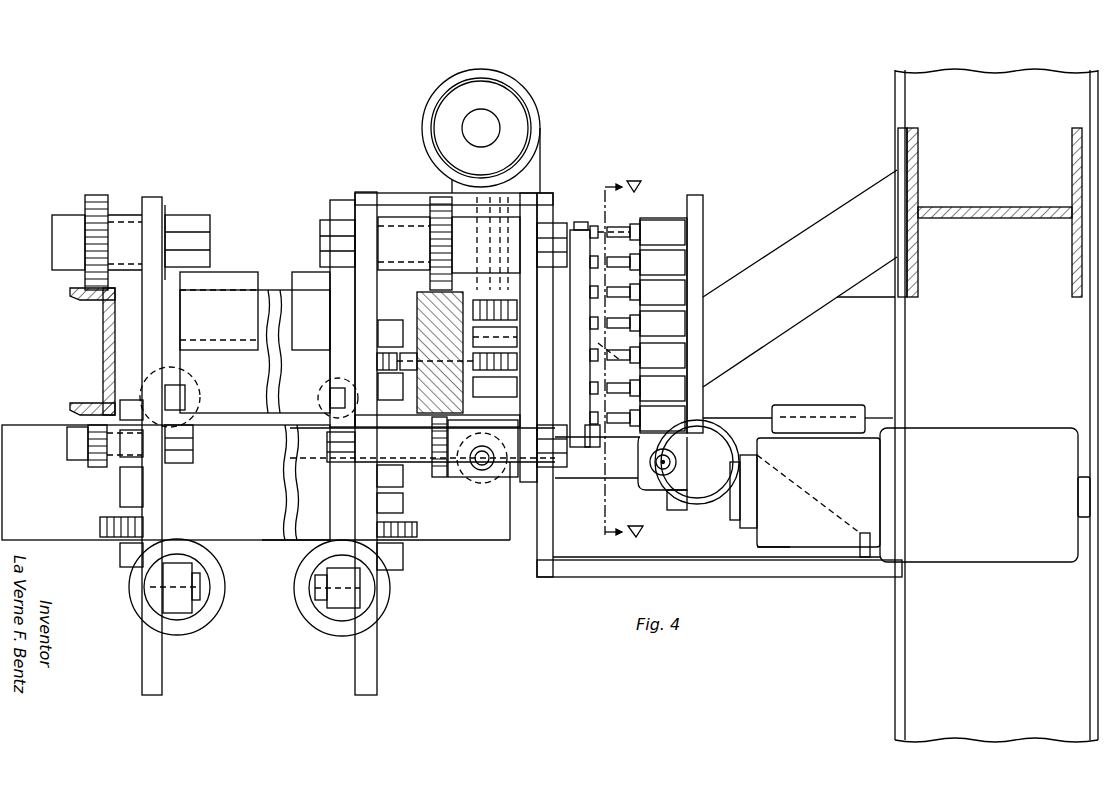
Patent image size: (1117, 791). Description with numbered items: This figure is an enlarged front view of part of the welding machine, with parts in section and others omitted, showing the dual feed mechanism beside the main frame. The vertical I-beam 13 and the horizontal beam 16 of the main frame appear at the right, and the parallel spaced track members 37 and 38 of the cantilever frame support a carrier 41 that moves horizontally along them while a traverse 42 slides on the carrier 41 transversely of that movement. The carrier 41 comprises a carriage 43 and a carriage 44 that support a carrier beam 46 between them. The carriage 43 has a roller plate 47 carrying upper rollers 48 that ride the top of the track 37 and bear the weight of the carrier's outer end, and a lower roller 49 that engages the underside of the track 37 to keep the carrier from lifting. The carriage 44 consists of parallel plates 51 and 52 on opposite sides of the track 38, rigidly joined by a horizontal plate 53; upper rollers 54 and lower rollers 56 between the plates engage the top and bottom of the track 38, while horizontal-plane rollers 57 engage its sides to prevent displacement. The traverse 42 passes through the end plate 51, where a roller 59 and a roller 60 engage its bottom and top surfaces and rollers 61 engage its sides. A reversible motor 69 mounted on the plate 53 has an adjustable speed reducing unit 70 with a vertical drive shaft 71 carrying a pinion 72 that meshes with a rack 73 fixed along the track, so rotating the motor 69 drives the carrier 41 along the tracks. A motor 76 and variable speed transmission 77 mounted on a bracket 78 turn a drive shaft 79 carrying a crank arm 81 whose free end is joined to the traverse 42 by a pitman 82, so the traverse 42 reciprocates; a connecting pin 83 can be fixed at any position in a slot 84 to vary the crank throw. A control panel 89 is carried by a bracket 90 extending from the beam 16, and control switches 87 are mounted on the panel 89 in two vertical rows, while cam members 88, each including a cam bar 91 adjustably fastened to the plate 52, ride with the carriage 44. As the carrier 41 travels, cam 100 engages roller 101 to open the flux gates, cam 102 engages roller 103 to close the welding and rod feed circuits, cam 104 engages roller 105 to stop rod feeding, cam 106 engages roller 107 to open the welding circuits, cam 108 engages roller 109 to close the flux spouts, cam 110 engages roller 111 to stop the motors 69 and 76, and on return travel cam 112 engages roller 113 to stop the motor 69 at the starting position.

The vertical I-beam 13 is at (903, 648).
The horizontal beam 16 is at (912, 278).
The track member 37 is at (103, 370).
The track member 38 is at (417, 303).
The carrier 41 is at (304, 265).
The traverse 42 is at (288, 540).
The carriage 43 is at (162, 200).
The carriage 44 is at (339, 200).
The carrier beam 46 is at (268, 356).
The roller plate 47 is at (162, 672).
The upper roller 48 is at (96, 196).
The lower roller 49 is at (94, 468).
The end plate 51 is at (366, 200).
The plate 52 is at (553, 205).
The horizontal plate 53 is at (408, 194).
The upper roller 54 is at (428, 258).
The lower roller 56 is at (440, 478).
The side roller 57 is at (473, 362).
The roller 59 is at (333, 630).
The roller 60 is at (324, 388).
The roller 61 is at (417, 529).
The reversible motor 69 is at (422, 122).
The adjustable speed reducing unit 70 is at (540, 118).
The vertical drive shaft 71 is at (476, 246).
The pinion 72 is at (473, 334).
The rack 73 is at (473, 309).
The motor 76 is at (996, 434).
The variable speed transmission 77 is at (757, 535).
The bracket 78 is at (742, 578).
The drive shaft 79 is at (697, 462).
The crank arm 81 is at (678, 492).
The pitman 82 is at (584, 475).
The connecting pin 83 is at (650, 462).
The slot 84 is at (697, 462).
The control switch 87 is at (678, 216).
The cam member 88 is at (583, 228).
The control panel 89 is at (703, 214).
The bracket 90 is at (800, 316).
The cam bar 91 is at (596, 352).
The cam 100 is at (606, 387).
The roller 101 is at (662, 355).
The cam 102 is at (592, 430).
The roller 103 is at (662, 418).
The cam 104 is at (606, 417).
The roller 105 is at (662, 388).
The cam 106 is at (606, 230).
The roller 107 is at (662, 232).
The cam 108 is at (606, 322).
The roller 109 is at (662, 323).
The cam 110 is at (606, 261).
The roller 111 is at (662, 262).
The cam 112 is at (606, 291).
The roller 113 is at (662, 292).